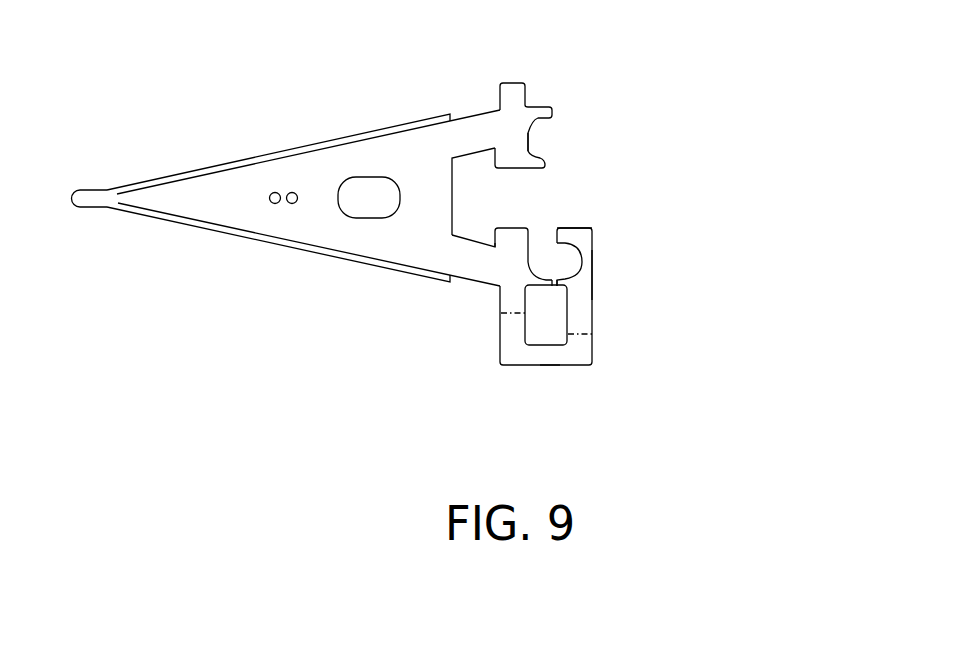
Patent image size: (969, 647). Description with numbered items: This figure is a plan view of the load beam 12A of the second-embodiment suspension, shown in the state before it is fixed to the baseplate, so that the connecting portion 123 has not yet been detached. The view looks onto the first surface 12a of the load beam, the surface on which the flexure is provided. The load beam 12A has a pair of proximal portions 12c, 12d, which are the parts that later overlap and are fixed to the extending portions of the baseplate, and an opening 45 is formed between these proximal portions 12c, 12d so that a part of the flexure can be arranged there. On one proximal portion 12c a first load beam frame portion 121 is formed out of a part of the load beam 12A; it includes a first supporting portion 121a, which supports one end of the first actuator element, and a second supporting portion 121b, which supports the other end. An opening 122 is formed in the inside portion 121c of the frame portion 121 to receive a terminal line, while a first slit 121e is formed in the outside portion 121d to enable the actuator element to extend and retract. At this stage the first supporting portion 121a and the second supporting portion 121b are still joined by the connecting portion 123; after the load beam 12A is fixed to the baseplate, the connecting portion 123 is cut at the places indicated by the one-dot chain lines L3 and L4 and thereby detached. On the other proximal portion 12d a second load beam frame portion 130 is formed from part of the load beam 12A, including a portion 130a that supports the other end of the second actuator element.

The first surface 12a is at (315, 167).
The load beam 12A is at (263, 222).
The opening 45 is at (513, 205).
The proximal portion 12c is at (463, 252).
The proximal portion 12d is at (497, 132).
The second load beam frame portion 130 is at (543, 93).
The portion 130a is at (522, 132).
The first load beam frame portion 121 is at (604, 244).
The first supporting portion 121a is at (594, 256).
The second supporting portion 121b is at (518, 259).
The inside portion 121c is at (566, 236).
The outside portion 121d is at (540, 283).
The first slit 121e is at (552, 287).
The opening 122 is at (576, 222).
The connecting portion 123 is at (553, 358).
The one-dot chain line L3 is at (503, 316).
The one-dot chain line L4 is at (594, 338).